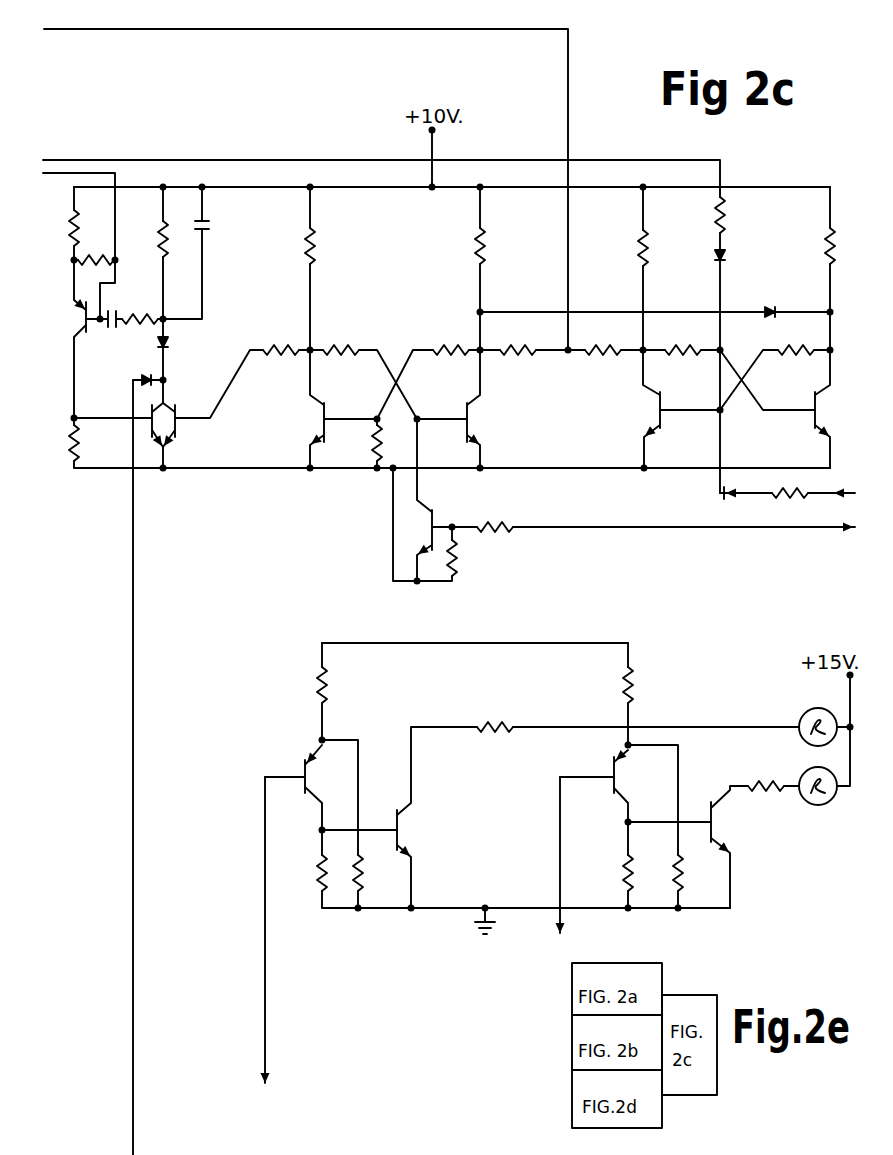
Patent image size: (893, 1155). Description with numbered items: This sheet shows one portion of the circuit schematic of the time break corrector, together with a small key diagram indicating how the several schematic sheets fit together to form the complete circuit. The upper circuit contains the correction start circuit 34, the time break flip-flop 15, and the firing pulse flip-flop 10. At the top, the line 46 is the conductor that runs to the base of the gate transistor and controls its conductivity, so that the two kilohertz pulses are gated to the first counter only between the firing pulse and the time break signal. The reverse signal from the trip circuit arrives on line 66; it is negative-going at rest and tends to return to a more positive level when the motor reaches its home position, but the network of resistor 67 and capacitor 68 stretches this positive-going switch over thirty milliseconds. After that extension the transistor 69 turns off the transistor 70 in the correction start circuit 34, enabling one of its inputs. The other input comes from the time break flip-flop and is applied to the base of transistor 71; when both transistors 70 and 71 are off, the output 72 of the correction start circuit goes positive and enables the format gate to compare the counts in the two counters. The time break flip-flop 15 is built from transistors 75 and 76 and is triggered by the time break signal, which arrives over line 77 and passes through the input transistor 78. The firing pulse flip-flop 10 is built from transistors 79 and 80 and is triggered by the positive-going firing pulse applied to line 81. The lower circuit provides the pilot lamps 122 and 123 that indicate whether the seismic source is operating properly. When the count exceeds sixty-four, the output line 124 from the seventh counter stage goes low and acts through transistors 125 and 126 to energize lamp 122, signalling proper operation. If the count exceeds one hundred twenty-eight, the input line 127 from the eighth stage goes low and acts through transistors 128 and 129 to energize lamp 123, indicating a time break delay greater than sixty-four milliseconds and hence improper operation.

In FIG. 2C, the line 46 is at (52, 30).
In FIG. 2C, the line 66 is at (128, 152).
In FIG. 2C, the resistor 67 is at (95, 250).
In FIG. 2C, the capacitor 68 is at (111, 335).
In FIG. 2C, the transistor 69 is at (80, 326).
In FIG. 2C, the transistor 70 is at (150, 412).
In FIG. 2C, the transistor 71 is at (178, 408).
In FIG. 2C, the correction start circuit 34 is at (168, 427).
In FIG. 2C, the output 72 is at (132, 537).
In FIG. 2C, the transistor 75 is at (320, 420).
In FIG. 2C, the transistor 76 is at (472, 417).
In FIG. 2C, the time break flip-flop 15 is at (392, 350).
In FIG. 2C, the input transistor 78 is at (434, 522).
In FIG. 2C, the transistor 79 is at (655, 412).
In FIG. 2C, the transistor 80 is at (816, 400).
In FIG. 2C, the firing pulse flip-flop 10 is at (729, 327).
In FIG. 2C, the line 81 is at (822, 493).
In FIG. 2C, the line 77 is at (818, 527).
In FIG. 2E, the pilot lamp 122 is at (816, 707).
In FIG. 2E, the pilot lamp 123 is at (804, 805).
In FIG. 2E, the output line 124 is at (267, 958).
In FIG. 2E, the transistor 125 is at (306, 787).
In FIG. 2E, the transistor 126 is at (408, 827).
In FIG. 2E, the input line 127 is at (567, 920).
In FIG. 2E, the transistor 128 is at (612, 794).
In FIG. 2E, the transistor 129 is at (712, 808).